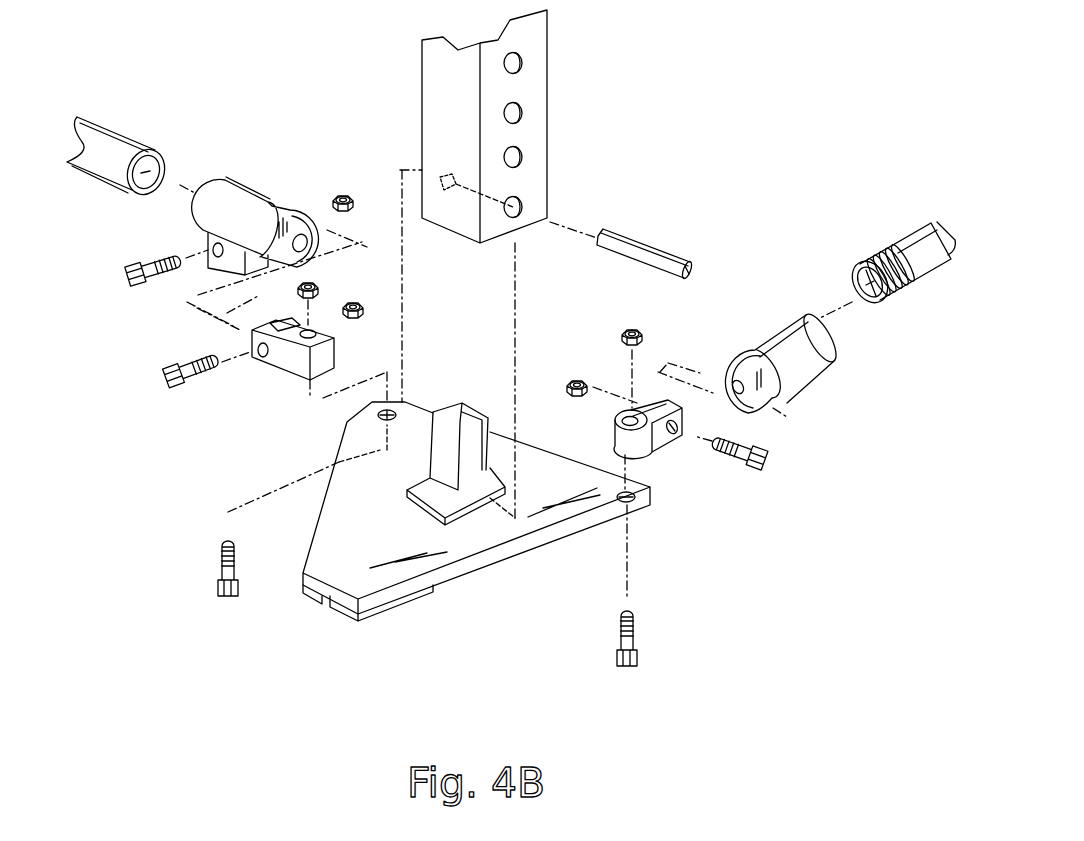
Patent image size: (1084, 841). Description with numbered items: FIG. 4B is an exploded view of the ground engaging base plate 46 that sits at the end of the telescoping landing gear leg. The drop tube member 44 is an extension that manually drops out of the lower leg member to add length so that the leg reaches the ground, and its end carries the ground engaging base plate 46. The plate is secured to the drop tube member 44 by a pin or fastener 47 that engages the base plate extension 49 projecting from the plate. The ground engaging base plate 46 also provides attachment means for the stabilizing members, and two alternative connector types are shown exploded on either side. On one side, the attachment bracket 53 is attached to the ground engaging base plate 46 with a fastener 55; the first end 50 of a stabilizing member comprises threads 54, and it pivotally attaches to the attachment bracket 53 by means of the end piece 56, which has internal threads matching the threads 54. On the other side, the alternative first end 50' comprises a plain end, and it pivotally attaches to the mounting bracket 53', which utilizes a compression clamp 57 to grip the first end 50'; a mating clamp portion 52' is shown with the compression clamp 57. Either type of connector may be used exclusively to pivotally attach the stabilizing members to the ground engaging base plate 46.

The drop tube member 44 is at (548, 78).
The ground engaging base plate 46 is at (475, 543).
The pin or fastener 47 is at (667, 252).
The base plate extension 49 is at (470, 402).
The first end 50 is at (891, 241).
The first end 50' is at (127, 134).
The clamp 52' is at (255, 205).
The attachment bracket 53 is at (677, 456).
The mounting bracket 53' is at (273, 368).
The threads 54 is at (895, 302).
The fastener 55 is at (220, 578).
The end piece 56 is at (808, 380).
The compression clamp 57 is at (210, 265).